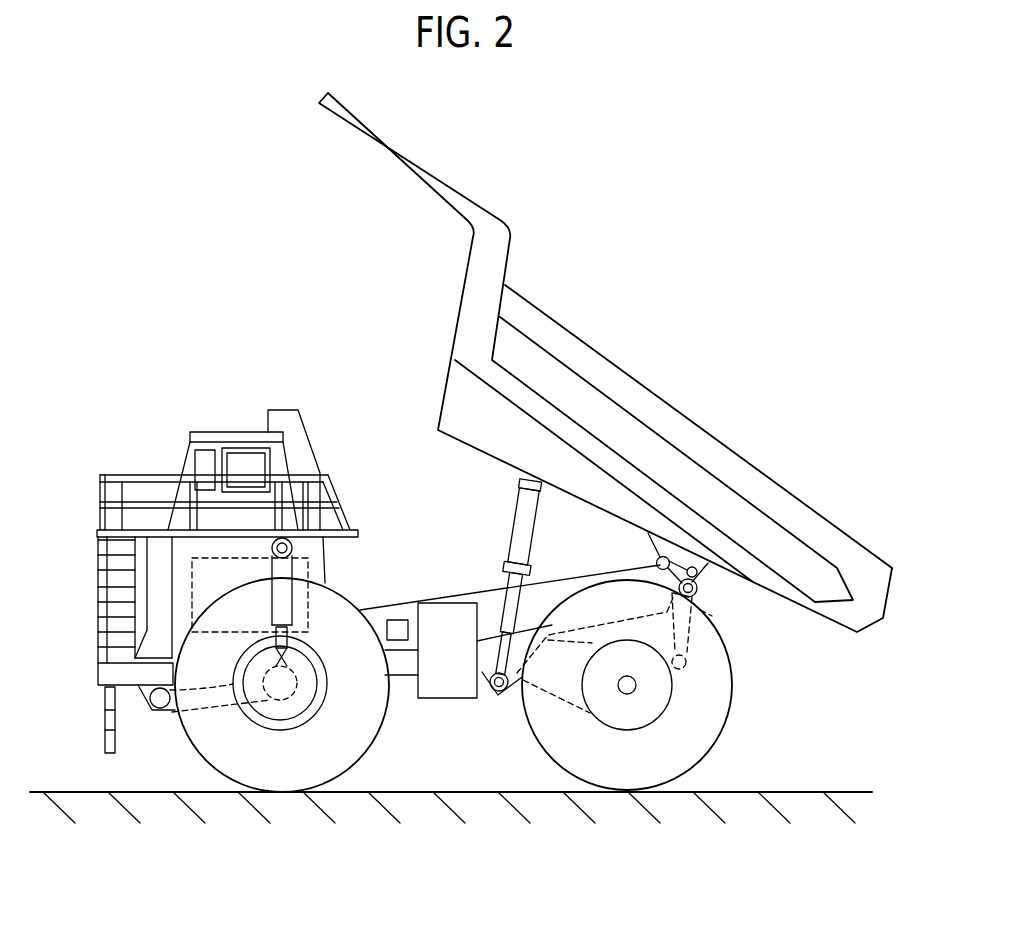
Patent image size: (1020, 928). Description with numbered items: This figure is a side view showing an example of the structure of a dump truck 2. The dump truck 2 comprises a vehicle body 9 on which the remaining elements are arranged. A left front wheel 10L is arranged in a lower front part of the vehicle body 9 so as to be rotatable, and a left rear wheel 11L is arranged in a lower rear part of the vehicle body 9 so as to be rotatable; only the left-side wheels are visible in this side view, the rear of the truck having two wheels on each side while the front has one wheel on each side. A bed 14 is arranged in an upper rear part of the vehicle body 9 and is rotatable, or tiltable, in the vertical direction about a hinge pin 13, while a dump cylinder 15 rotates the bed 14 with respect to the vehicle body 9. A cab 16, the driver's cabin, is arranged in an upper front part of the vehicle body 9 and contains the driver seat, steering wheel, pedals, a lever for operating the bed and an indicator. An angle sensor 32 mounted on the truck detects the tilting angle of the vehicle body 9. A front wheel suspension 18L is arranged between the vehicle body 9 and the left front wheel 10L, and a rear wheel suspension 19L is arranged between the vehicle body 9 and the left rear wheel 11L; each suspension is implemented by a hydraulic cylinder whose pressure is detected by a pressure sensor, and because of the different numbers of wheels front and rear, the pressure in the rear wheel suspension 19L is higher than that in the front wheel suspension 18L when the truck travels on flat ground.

The dump truck 2 is at (128, 411).
The vehicle body 9 is at (490, 632).
The left front wheel 10L is at (282, 782).
The left rear wheel 11L is at (610, 780).
The hinge pin 13 is at (658, 565).
The bed 14 is at (666, 396).
The dump cylinder 15 is at (520, 512).
The cab 16 is at (237, 430).
The left front wheel suspension 18L is at (295, 603).
The left rear wheel suspension 19L is at (716, 617).
The angle sensor 32 is at (397, 640).